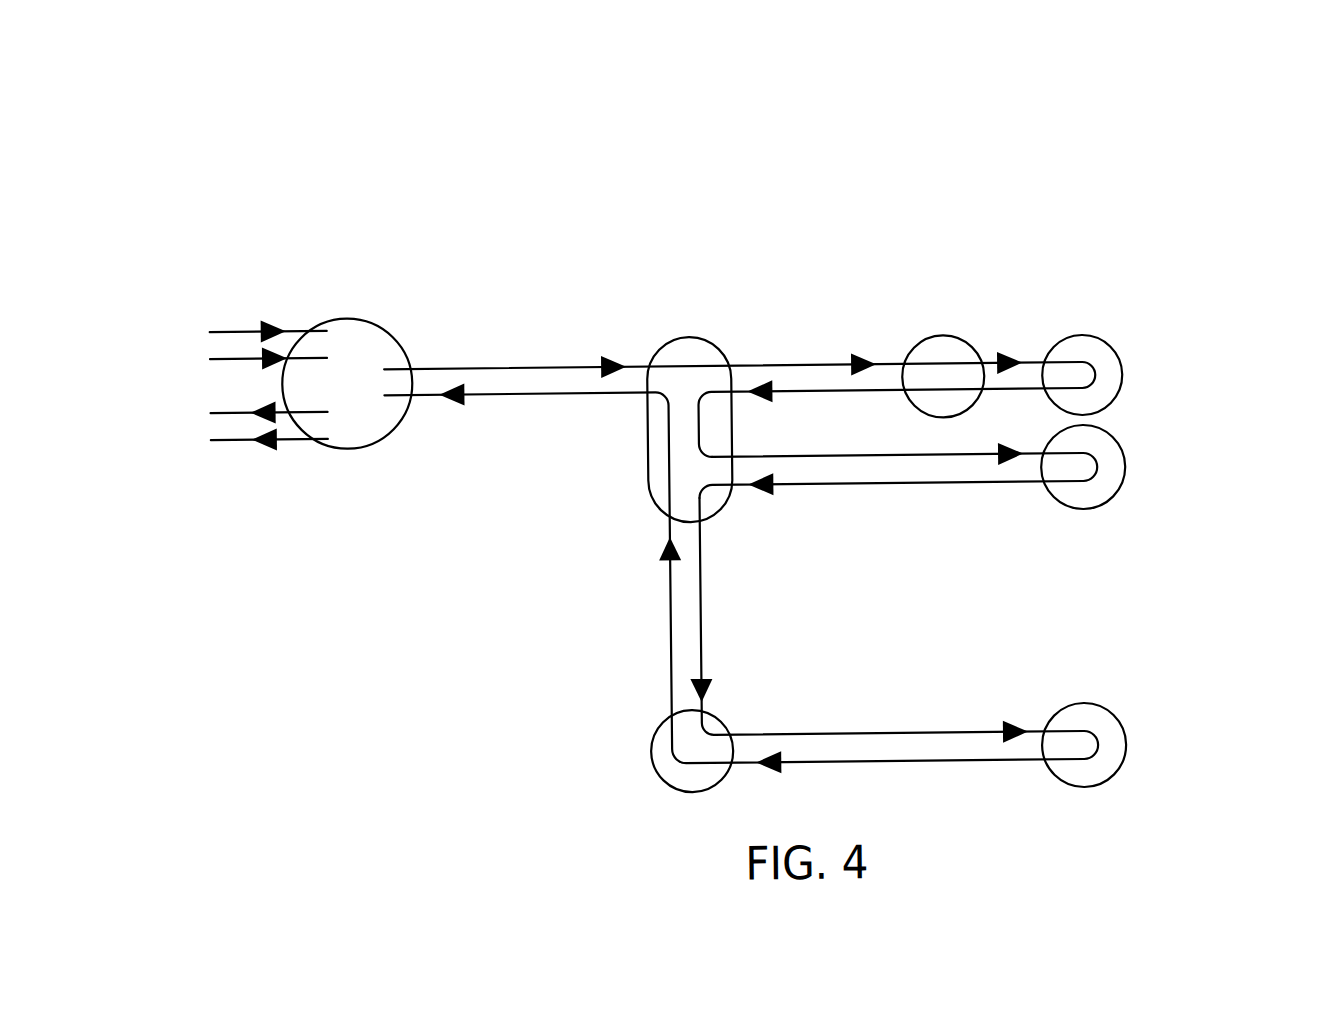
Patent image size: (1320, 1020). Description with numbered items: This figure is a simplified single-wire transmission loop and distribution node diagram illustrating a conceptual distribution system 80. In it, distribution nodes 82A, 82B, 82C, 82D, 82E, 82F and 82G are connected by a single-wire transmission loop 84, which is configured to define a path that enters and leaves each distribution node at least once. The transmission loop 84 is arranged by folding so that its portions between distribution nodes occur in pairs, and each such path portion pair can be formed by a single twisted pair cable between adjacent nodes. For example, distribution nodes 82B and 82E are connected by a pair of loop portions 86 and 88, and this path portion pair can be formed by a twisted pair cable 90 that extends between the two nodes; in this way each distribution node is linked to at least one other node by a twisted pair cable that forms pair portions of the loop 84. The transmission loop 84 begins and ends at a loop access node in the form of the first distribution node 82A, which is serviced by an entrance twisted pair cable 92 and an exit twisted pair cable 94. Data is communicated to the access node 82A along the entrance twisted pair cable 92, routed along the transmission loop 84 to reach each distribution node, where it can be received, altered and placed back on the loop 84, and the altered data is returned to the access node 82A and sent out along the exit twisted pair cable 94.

The conceptual distribution system 80 is at (1122, 227).
The first distribution node 82A is at (371, 317).
The distribution node 82B is at (709, 340).
The distribution node 82C is at (963, 336).
The distribution node 82D is at (1111, 346).
The distribution node 82E is at (1125, 454).
The distribution node 82F is at (652, 772).
The distribution node 82G is at (1117, 771).
The single-wire transmission loop 84 is at (436, 365).
The loop portion 86 is at (870, 455).
The loop portion 88 is at (869, 487).
The twisted pair cable 90 is at (950, 488).
The entrance twisted pair cable 92 is at (221, 322).
The exit twisted pair cable 94 is at (222, 435).